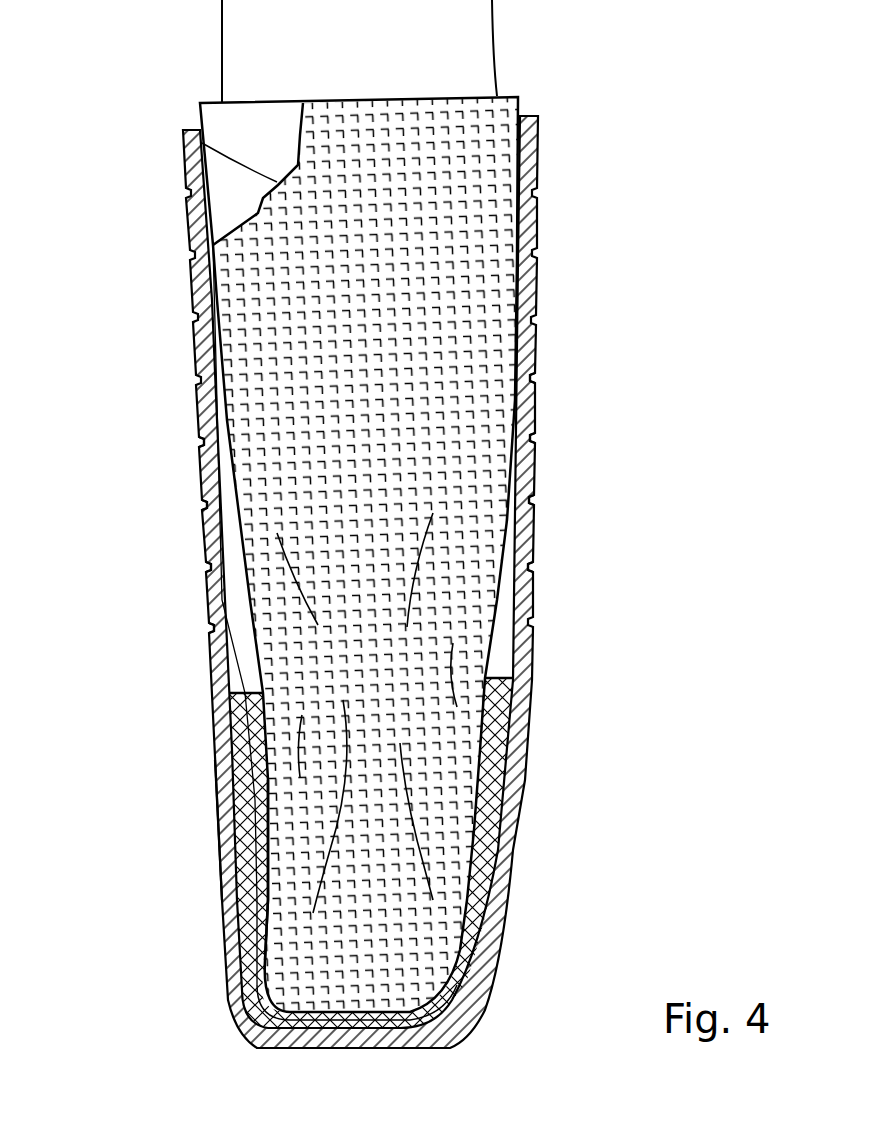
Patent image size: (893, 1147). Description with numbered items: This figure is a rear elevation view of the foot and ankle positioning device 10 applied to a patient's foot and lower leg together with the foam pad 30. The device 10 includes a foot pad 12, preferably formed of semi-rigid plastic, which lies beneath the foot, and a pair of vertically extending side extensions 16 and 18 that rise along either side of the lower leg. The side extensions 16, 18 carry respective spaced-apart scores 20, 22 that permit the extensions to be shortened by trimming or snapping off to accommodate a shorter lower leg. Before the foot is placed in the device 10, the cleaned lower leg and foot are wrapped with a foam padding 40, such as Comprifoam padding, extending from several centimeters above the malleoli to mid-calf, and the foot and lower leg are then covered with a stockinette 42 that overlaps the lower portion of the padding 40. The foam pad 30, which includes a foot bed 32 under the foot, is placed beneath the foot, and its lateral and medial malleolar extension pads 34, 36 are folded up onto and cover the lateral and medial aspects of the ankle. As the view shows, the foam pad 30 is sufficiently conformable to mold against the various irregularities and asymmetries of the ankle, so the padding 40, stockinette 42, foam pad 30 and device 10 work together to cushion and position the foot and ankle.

The foot and ankle positioning device 10 is at (112, 378).
The foot pad 12 is at (248, 1037).
The side extension 16 is at (523, 665).
The side extension 18 is at (223, 805).
The scores 20 is at (530, 567).
The scores 22 is at (207, 625).
The foam pad 30 is at (217, 717).
The foot bed 32 is at (455, 1008).
The lateral malleolar extension pad 34 is at (247, 923).
The medial malleolar extension pad 36 is at (497, 822).
The foam padding 40 is at (230, 121).
The stockinette 42 is at (497, 348).